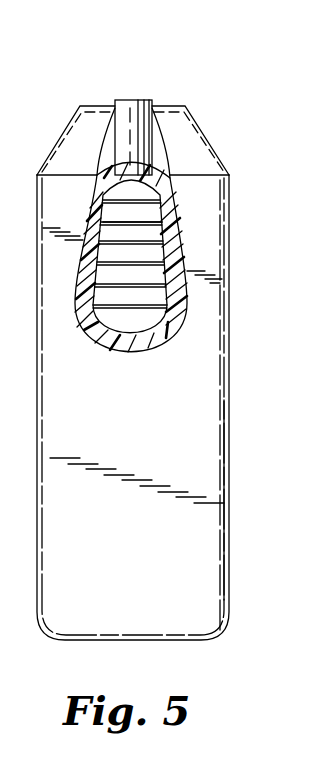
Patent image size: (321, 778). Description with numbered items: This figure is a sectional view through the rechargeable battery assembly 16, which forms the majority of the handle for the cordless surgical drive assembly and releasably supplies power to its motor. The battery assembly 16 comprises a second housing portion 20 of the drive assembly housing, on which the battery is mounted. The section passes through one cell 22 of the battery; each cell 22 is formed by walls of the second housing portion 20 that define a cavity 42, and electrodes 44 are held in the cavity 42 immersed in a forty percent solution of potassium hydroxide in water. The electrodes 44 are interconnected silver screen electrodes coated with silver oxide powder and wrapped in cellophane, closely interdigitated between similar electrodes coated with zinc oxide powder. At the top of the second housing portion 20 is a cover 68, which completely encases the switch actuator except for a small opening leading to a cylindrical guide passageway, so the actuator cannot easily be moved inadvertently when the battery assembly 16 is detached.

The rechargeable battery assembly 16 is at (227, 450).
The second housing portion 20 is at (223, 515).
The cell 22 is at (130, 325).
The cavity 42 is at (163, 292).
The electrodes 44 is at (158, 262).
The cover 68 is at (148, 103).